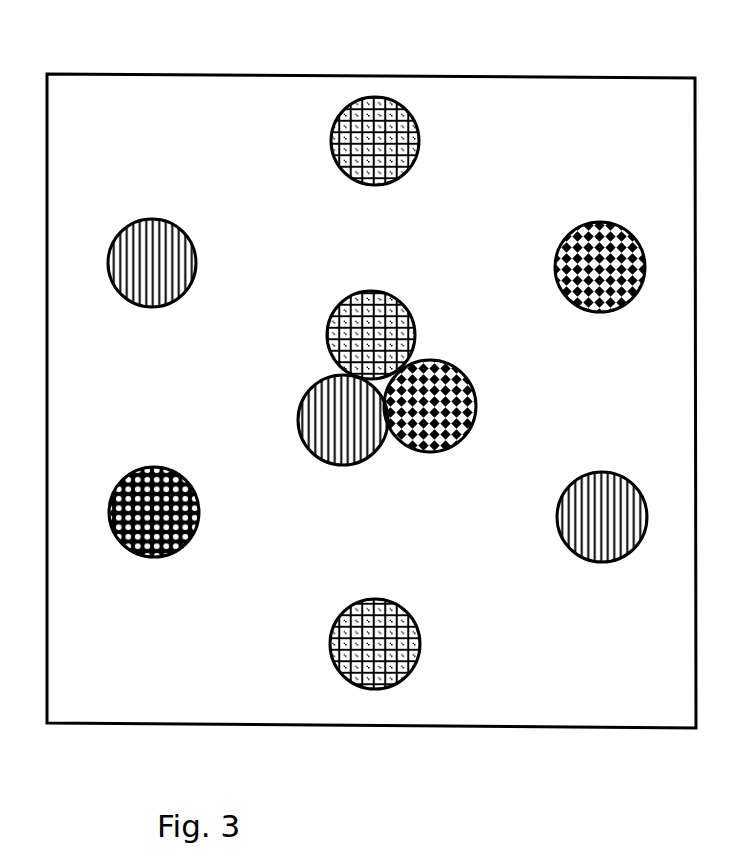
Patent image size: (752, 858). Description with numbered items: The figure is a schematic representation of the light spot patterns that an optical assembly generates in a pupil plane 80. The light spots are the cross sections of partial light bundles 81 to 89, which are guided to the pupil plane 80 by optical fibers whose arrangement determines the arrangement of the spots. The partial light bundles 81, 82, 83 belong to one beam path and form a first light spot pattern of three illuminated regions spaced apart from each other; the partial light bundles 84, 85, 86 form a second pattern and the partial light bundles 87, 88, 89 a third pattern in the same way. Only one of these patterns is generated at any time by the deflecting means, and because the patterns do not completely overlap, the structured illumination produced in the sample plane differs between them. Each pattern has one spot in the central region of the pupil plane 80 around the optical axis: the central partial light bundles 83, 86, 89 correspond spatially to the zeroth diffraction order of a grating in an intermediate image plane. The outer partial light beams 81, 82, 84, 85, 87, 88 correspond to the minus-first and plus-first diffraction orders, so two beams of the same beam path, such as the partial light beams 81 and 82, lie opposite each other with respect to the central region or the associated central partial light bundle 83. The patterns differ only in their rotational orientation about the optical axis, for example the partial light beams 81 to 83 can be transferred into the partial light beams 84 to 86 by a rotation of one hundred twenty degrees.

The pupil plane 80 is at (230, 74).
The partial light bundle 81 is at (346, 184).
The partial light bundle 82 is at (334, 668).
The partial light bundle 83 is at (327, 340).
The partial light bundle 84 is at (585, 312).
The partial light bundle 85 is at (133, 556).
The partial light bundle 86 is at (476, 404).
The partial light bundle 87 is at (600, 562).
The partial light bundle 88 is at (150, 307).
The partial light bundle 89 is at (318, 462).